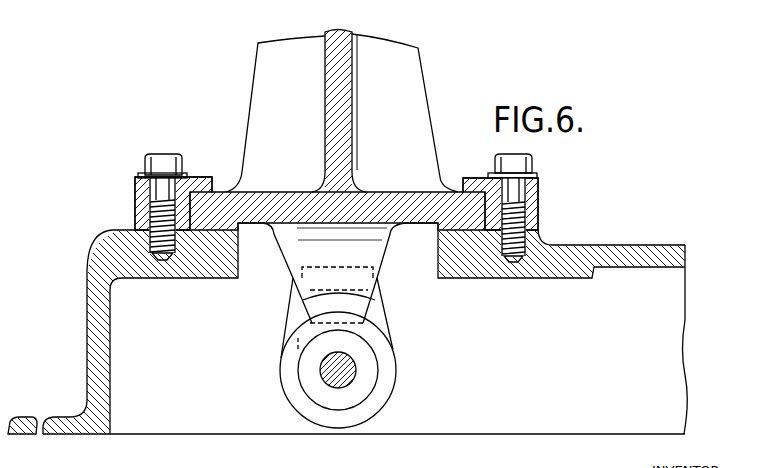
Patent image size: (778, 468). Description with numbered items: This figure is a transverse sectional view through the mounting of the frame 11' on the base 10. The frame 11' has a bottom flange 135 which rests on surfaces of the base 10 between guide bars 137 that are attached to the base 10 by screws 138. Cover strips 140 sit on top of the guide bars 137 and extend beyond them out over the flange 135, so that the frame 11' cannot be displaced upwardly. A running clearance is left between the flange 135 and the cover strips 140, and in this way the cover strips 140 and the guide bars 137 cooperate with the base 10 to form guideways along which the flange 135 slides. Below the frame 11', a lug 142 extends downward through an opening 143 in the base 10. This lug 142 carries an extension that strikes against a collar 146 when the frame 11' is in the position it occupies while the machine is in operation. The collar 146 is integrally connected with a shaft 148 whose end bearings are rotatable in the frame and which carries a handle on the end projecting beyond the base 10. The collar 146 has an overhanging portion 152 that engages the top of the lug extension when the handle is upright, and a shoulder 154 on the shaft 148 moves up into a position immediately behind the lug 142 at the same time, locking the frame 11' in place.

The base 10 is at (84, 333).
The frame 11' is at (348, 111).
The bottom flange 135 is at (207, 222).
The guide bars 137 is at (137, 211).
The screws 138 is at (143, 165).
The cover strips 140 is at (212, 182).
The lug 142 is at (377, 252).
The opening 143 is at (240, 260).
The collar 146 is at (383, 320).
The shaft 148 is at (367, 381).
The overhanging portion 152 is at (312, 268).
The shoulder 154 is at (367, 338).